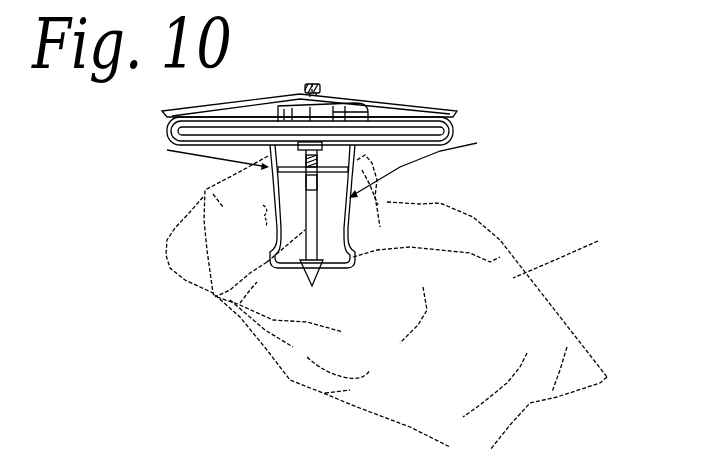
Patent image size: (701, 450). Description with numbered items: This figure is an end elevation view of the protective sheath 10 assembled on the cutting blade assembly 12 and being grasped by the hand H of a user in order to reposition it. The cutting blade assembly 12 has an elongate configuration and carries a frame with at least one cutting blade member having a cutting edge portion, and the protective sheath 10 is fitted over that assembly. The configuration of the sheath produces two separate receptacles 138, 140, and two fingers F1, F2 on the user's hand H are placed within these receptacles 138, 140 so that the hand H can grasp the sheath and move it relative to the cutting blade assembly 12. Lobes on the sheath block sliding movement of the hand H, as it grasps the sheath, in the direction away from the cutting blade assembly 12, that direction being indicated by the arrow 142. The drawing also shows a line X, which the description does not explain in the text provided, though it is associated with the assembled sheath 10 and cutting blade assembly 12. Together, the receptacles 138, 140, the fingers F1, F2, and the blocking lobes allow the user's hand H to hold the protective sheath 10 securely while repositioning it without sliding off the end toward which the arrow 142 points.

The protective sheath 10 is at (332, 200).
The cutting blade assembly 12 is at (257, 116).
The receptacle 138 is at (383, 188).
The receptacle 140 is at (266, 194).
The arrow 142 is at (214, 297).
The axis X is at (366, 104).
The finger F1 is at (477, 143).
The finger F2 is at (167, 150).
The hand H is at (598, 241).